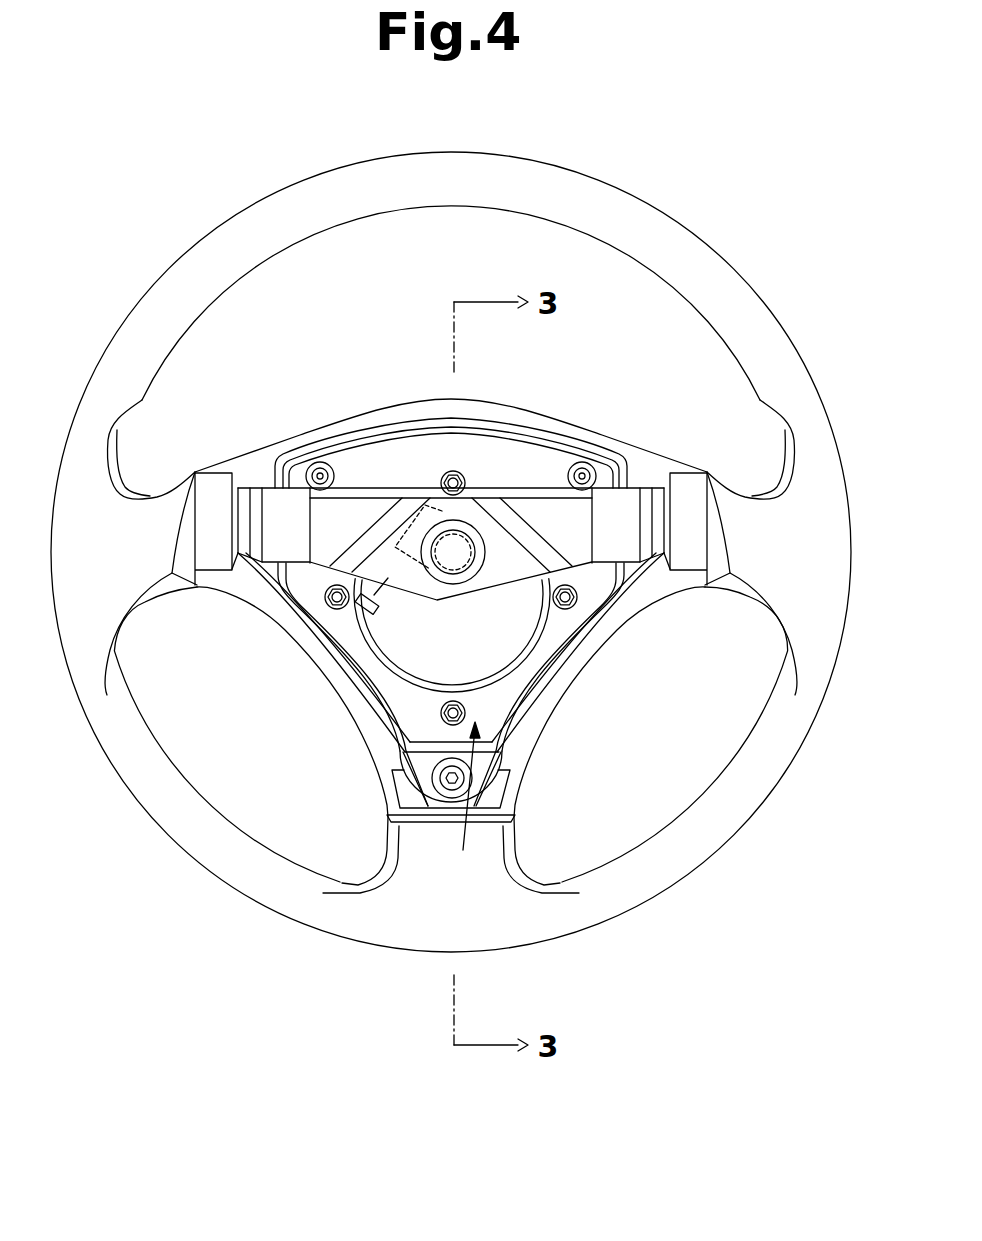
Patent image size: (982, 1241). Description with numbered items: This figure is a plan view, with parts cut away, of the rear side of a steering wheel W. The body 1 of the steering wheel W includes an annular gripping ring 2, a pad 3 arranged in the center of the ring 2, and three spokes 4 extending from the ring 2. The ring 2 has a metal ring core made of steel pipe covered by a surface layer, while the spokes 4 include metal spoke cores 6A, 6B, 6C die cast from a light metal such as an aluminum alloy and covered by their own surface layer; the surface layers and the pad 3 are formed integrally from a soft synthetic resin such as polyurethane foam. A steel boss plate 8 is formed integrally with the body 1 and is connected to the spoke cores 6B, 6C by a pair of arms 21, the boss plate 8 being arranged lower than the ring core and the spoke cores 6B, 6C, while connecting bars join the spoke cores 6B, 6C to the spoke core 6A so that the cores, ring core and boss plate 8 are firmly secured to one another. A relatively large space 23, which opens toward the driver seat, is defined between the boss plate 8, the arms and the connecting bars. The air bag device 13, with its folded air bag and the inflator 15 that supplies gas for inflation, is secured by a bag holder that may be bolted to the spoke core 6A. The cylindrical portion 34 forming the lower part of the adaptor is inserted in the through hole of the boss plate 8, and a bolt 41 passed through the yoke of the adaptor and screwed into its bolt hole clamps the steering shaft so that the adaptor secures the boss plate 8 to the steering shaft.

The steering wheel W is at (672, 161).
The body 1 is at (736, 243).
The gripping ring 2 is at (768, 296).
The pad 3 is at (323, 687).
The spokes 4 is at (157, 603).
The spoke core 6A is at (478, 800).
The spoke core 6B is at (685, 497).
The spoke core 6C is at (215, 500).
The boss plate 8 is at (548, 497).
The air bag device 13 is at (573, 647).
The inflator 15 is at (366, 726).
The arms 21 is at (257, 493).
The space 23 is at (457, 803).
The cylindrical portion 34 is at (473, 577).
The bolt 41 is at (377, 613).